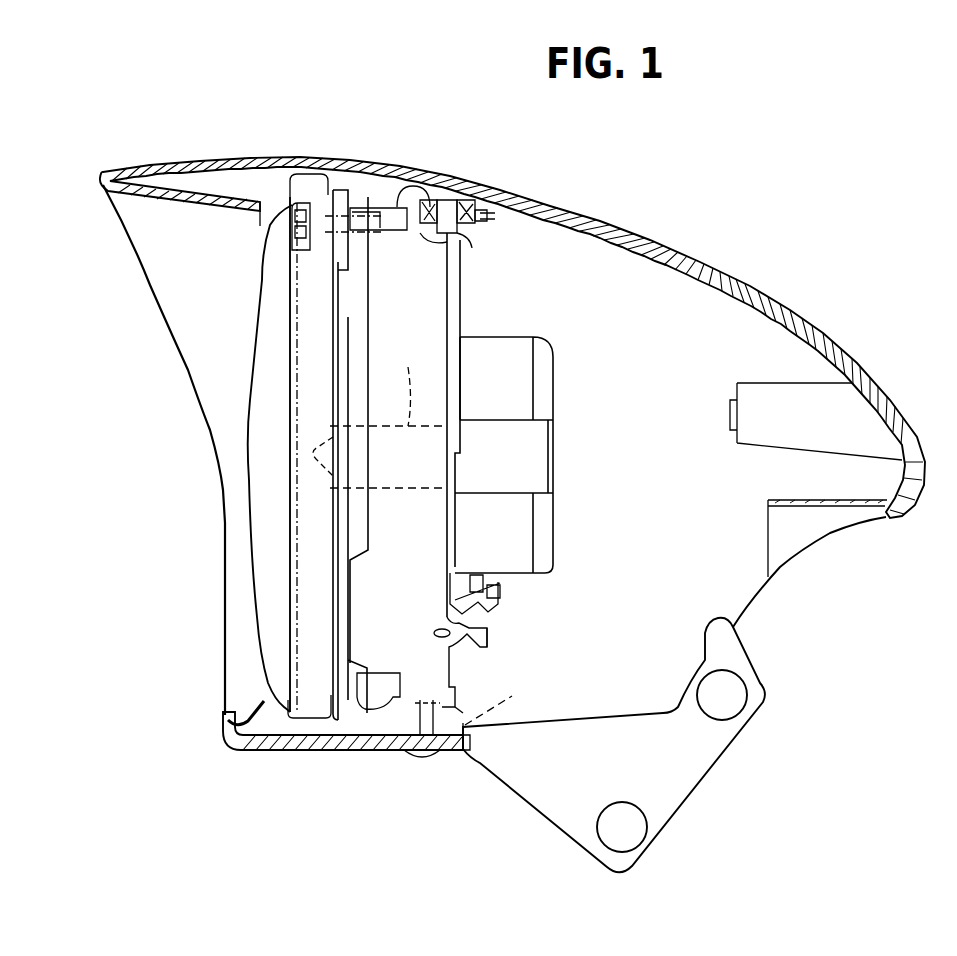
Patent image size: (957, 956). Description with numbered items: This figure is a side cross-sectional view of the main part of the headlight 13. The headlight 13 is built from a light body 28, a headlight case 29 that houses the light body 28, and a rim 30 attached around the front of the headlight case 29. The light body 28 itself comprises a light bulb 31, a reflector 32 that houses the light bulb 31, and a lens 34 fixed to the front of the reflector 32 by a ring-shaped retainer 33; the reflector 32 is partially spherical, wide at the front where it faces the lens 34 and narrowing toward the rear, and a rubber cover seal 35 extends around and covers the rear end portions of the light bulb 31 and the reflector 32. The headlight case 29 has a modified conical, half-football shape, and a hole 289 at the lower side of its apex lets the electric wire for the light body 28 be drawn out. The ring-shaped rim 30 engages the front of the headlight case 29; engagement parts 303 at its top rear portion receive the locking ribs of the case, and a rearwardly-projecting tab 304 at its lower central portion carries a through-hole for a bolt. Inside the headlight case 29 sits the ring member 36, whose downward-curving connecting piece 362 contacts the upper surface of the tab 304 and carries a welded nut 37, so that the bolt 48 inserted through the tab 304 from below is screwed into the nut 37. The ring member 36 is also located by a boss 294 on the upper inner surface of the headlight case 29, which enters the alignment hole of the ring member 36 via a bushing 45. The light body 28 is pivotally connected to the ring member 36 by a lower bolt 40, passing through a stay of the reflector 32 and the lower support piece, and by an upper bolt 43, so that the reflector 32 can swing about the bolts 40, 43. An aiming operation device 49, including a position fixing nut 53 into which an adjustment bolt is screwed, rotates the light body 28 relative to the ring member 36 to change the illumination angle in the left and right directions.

The headlight 13 is at (745, 276).
The light body 28 is at (241, 467).
The headlight case 29 is at (658, 241).
The rim 30 is at (225, 636).
The light bulb 31 is at (380, 413).
The reflector 32 is at (357, 333).
The ring-shaped retainer 33 is at (313, 703).
The lens 34 is at (268, 358).
The rubber cover seal 35 is at (548, 528).
The ring member 36 is at (432, 277).
The nut 37 is at (516, 692).
The bolt 40 is at (374, 705).
The bolt 43 is at (405, 191).
The bushing 45 is at (463, 223).
The bolt 48 is at (432, 758).
The aiming operation device 49 is at (493, 632).
The position fixing nut 53 is at (490, 607).
The hole 289 is at (742, 580).
The boss 294 is at (457, 236).
The engagement part 303 is at (322, 175).
The tab 304 is at (382, 757).
The connecting piece 362 is at (457, 712).